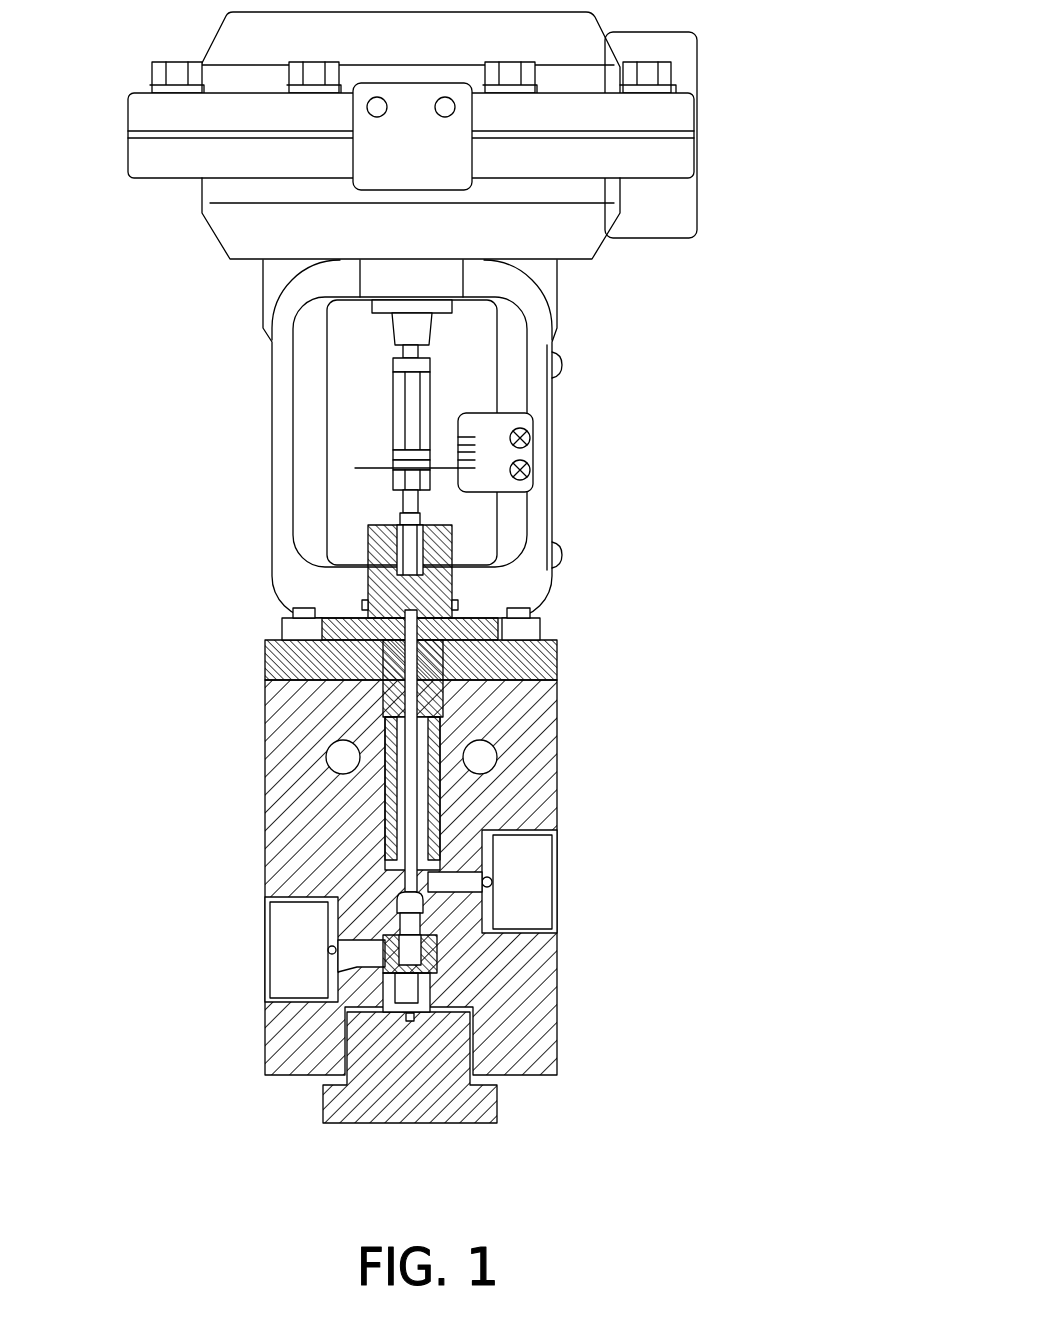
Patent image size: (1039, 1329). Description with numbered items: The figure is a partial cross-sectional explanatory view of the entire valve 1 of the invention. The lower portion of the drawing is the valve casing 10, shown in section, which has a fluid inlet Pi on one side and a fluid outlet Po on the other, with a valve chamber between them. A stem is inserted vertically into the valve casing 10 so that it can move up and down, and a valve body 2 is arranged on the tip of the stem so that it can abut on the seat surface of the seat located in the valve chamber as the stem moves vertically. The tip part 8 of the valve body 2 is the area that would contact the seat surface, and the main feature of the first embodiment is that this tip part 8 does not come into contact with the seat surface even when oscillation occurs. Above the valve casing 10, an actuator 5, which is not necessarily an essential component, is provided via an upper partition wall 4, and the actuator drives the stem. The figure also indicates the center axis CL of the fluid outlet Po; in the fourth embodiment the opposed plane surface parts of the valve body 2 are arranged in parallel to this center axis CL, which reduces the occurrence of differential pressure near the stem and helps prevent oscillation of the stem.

The valve 1 is at (578, 589).
The valve body 2 is at (398, 897).
The upper partition wall 4 is at (560, 655).
The actuator 5 is at (651, 272).
The tip part 8 is at (385, 933).
The valve casing 10 is at (555, 783).
The fluid inlet Pi is at (370, 950).
The fluid outlet Po is at (492, 880).
The center axis CL is at (490, 908).